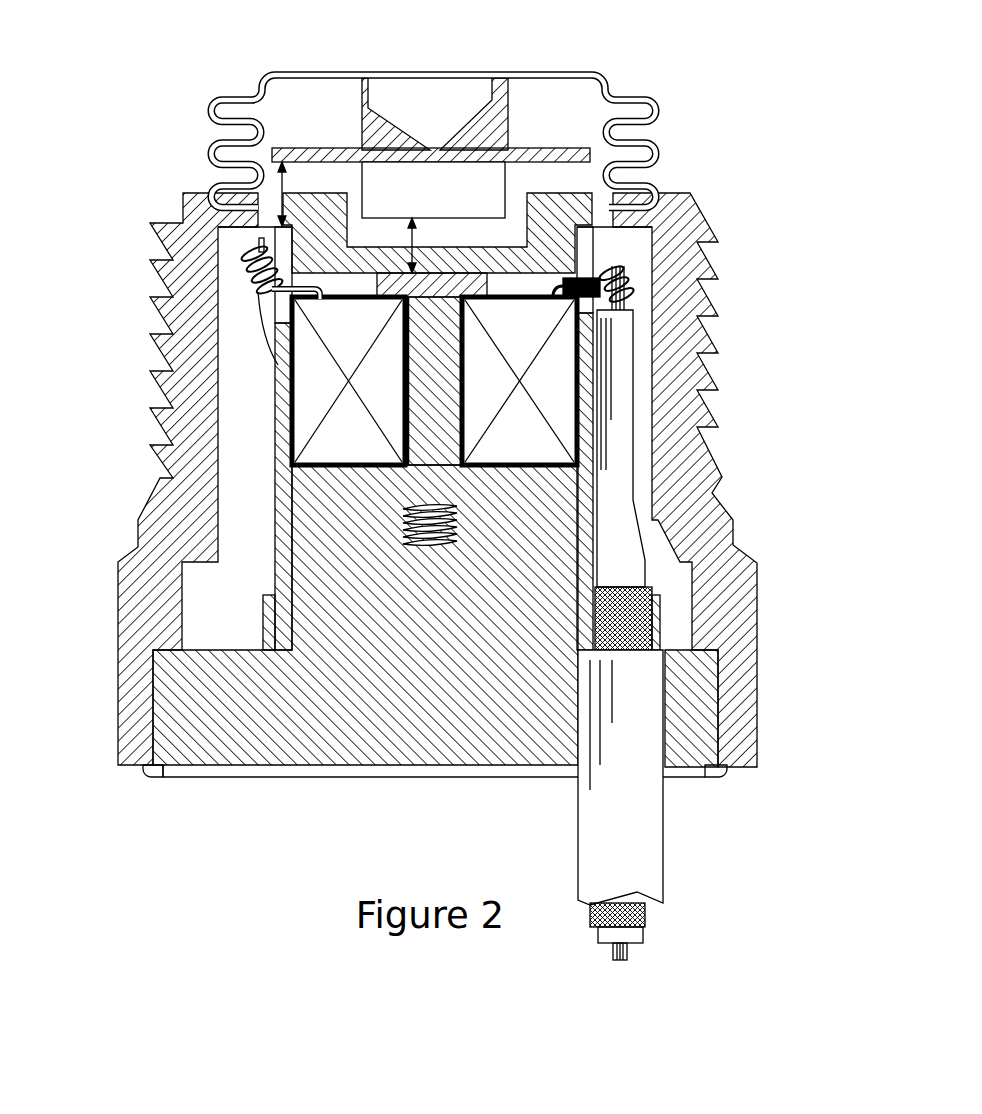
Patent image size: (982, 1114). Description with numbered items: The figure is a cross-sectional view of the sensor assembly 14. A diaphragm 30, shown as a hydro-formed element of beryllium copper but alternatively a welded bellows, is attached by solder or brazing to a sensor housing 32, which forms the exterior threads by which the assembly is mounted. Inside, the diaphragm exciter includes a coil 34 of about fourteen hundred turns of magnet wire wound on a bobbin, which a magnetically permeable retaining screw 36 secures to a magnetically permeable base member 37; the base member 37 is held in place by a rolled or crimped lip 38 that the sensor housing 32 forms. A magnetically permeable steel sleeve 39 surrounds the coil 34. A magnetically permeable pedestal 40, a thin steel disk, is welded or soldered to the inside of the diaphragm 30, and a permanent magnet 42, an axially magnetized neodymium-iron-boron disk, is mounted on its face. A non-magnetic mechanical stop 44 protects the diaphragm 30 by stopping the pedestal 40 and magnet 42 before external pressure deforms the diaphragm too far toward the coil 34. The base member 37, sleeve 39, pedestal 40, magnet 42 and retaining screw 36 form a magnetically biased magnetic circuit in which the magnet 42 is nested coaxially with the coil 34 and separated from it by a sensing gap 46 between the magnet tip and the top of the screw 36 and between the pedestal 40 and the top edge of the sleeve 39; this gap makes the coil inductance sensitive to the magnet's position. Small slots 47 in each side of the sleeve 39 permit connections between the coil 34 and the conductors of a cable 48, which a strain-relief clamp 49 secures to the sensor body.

The sensor assembly 14 is at (757, 585).
The diaphragm 30 is at (660, 113).
The sensor housing 32 is at (677, 220).
The coil 34 is at (347, 335).
The retaining screw 36 is at (432, 437).
The base member 37 is at (343, 742).
The rolled or crimped lip 38 is at (148, 780).
The sleeve 39 is at (285, 378).
The pedestal 40 is at (537, 148).
The permanent magnet 42 is at (468, 190).
The mechanical stop 44 is at (548, 223).
The sensing gap 46 is at (410, 265).
The slots 47 is at (280, 262).
The cable 48 is at (640, 855).
The strain-relief clamp 49 is at (266, 620).